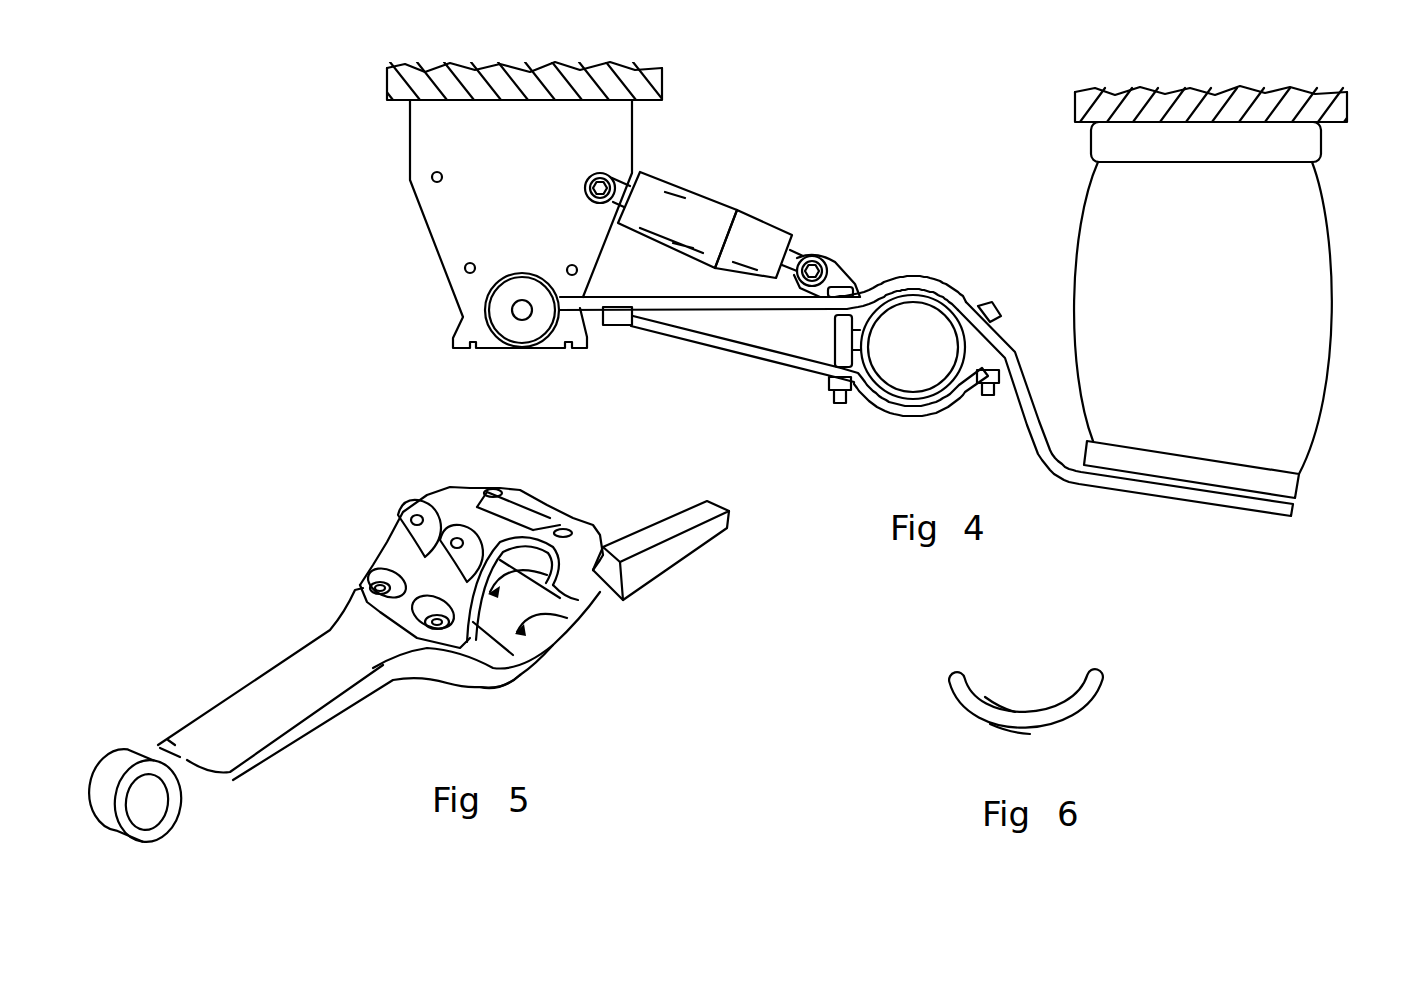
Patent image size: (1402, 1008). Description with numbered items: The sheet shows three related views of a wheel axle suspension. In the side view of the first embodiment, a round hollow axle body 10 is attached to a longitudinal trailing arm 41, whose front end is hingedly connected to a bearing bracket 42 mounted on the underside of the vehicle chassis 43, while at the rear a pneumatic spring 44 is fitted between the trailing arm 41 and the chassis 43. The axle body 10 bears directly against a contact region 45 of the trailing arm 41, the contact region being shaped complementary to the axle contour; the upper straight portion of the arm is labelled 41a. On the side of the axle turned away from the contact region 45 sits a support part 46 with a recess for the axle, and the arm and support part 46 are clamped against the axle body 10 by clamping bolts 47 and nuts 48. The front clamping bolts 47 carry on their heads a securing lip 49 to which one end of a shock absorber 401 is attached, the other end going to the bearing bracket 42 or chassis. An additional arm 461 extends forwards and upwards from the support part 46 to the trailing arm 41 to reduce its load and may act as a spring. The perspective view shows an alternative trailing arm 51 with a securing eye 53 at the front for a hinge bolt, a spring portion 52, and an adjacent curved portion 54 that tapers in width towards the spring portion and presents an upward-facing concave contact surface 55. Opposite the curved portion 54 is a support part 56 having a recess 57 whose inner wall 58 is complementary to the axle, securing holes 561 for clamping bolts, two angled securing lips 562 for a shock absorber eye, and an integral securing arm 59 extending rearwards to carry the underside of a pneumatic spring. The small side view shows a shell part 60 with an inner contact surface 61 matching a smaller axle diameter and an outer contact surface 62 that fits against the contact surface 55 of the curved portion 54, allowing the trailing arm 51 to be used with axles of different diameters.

In FIG. 4, the axle body 10 is at (896, 312).
In FIG. 4, the trailing arm 41 is at (926, 357).
In FIG. 4, the upper arm portion 41a is at (695, 305).
In FIG. 4, the bearing bracket 42 is at (432, 215).
In FIG. 4, the vehicle chassis 43 is at (392, 78).
In FIG. 4, the pneumatic spring 44 is at (1091, 253).
In FIG. 4, the contact region 45 is at (920, 300).
In FIG. 4, the support part 46 is at (887, 395).
In FIG. 4, the clamping bolts 47 is at (800, 342).
In FIG. 4, the nuts 48 is at (833, 395).
In FIG. 4, the securing lip 49 is at (832, 262).
In FIG. 4, the shock absorber 401 is at (695, 197).
In FIG. 4, the additional arm 461 is at (713, 342).
In FIG. 5, the trailing arm 51 is at (411, 630).
In FIG. 5, the spring portion 52 is at (297, 705).
In FIG. 5, the securing eye 53 is at (152, 812).
In FIG. 5, the curved portion 54 is at (527, 668).
In FIG. 5, the contact surface 55 is at (557, 620).
In FIG. 5, the support part 56 is at (435, 536).
In FIG. 5, the securing holes 561 is at (513, 503).
In FIG. 5, the securing lips 562 is at (416, 497).
In FIG. 5, the recess 57 is at (600, 540).
In FIG. 5, the inner wall 58 is at (578, 600).
In FIG. 5, the securing arm 59 is at (666, 562).
In FIG. 6, the shell part 60 is at (1037, 710).
In FIG. 6, the inner contact surface 61 is at (1001, 706).
In FIG. 6, the outer contact surface 62 is at (999, 732).